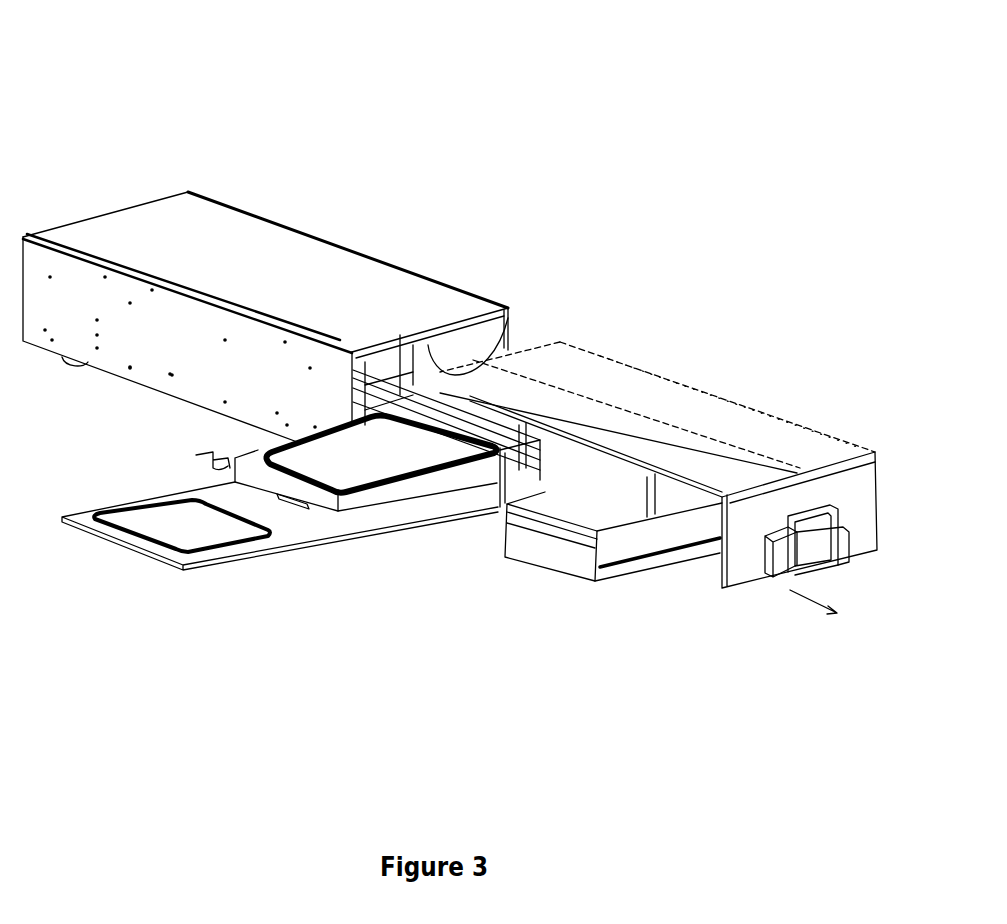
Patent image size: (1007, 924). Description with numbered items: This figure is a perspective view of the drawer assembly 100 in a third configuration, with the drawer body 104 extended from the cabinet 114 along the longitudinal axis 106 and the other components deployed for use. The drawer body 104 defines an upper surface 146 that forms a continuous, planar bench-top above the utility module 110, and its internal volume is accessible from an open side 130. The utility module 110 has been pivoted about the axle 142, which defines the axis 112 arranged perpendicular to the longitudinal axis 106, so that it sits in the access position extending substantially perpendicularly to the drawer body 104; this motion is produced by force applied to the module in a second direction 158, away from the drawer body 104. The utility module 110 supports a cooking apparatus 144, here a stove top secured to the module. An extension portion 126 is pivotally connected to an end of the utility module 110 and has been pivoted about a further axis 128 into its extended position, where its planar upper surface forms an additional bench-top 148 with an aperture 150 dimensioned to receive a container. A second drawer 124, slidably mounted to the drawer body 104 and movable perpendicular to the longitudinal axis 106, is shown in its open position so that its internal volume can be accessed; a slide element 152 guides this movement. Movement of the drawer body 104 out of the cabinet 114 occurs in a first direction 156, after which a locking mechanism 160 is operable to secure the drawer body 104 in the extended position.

The drawer assembly 100 is at (183, 120).
The drawer body 104 is at (762, 432).
The longitudinal axis 106 is at (650, 418).
The utility module 110 is at (428, 512).
The axis 112 is at (440, 340).
The cabinet 114 is at (270, 252).
The second drawer 124 is at (558, 565).
The extension portion 126 is at (233, 547).
The further axis 128 is at (390, 520).
The open side 130 is at (576, 463).
The axle 142 is at (428, 345).
The cooking apparatus 144 is at (360, 468).
The upper surface 146 is at (710, 418).
The additional bench-top 148 is at (290, 513).
The aperture 150 is at (167, 527).
The slide rail 152 is at (637, 563).
The first direction 156 is at (790, 590).
The second direction 158 is at (513, 327).
The locking mechanism 160 is at (210, 450).